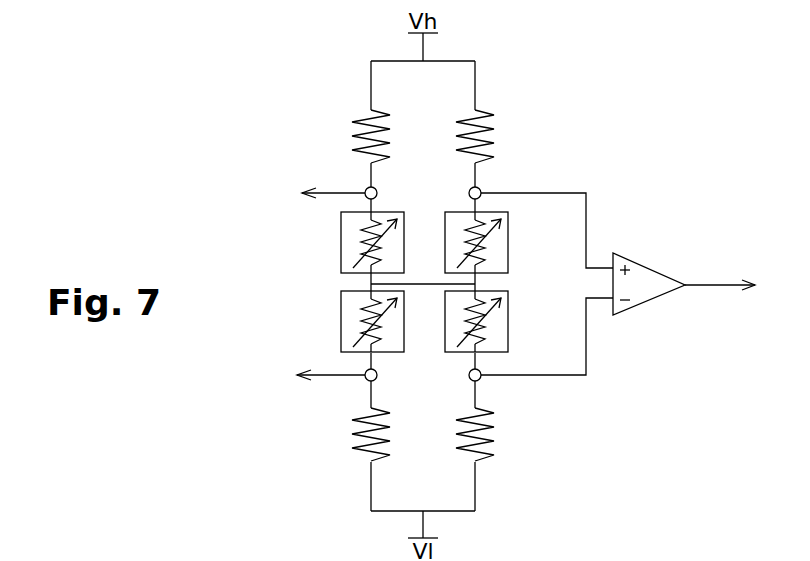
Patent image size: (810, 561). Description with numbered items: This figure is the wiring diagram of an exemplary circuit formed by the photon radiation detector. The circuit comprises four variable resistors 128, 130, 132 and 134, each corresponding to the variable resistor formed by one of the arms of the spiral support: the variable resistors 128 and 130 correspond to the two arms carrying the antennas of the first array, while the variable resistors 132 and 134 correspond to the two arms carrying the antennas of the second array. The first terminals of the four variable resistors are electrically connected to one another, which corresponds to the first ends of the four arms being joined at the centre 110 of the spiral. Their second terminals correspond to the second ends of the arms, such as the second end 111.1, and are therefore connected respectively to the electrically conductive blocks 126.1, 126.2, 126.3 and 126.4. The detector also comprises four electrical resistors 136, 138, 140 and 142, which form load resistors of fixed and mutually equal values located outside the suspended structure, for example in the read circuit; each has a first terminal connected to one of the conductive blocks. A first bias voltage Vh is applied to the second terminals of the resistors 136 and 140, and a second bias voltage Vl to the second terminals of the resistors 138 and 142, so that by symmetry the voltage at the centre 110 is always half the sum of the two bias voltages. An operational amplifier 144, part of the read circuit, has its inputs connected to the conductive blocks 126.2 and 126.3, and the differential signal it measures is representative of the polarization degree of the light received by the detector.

The electrical resistor 136 is at (352, 118).
The electrical resistor 140 is at (495, 112).
The electrical resistor 142 is at (353, 462).
The electrical resistor 138 is at (495, 455).
The variable resistor 128 is at (341, 245).
The variable resistor 132 is at (510, 258).
The variable resistor 134 is at (341, 323).
The variable resistor 130 is at (510, 330).
The centre of the spiral 110 is at (424, 284).
The electrically conductive block 126.1 is at (368, 190).
The electrically conductive block 126.2 is at (481, 377).
The electrically conductive block 126.3 is at (480, 191).
The electrically conductive block 126.4 is at (368, 382).
The operational amplifier 144 is at (648, 278).
The second end of the arm of the spiral 111.1 is at (153, 555).